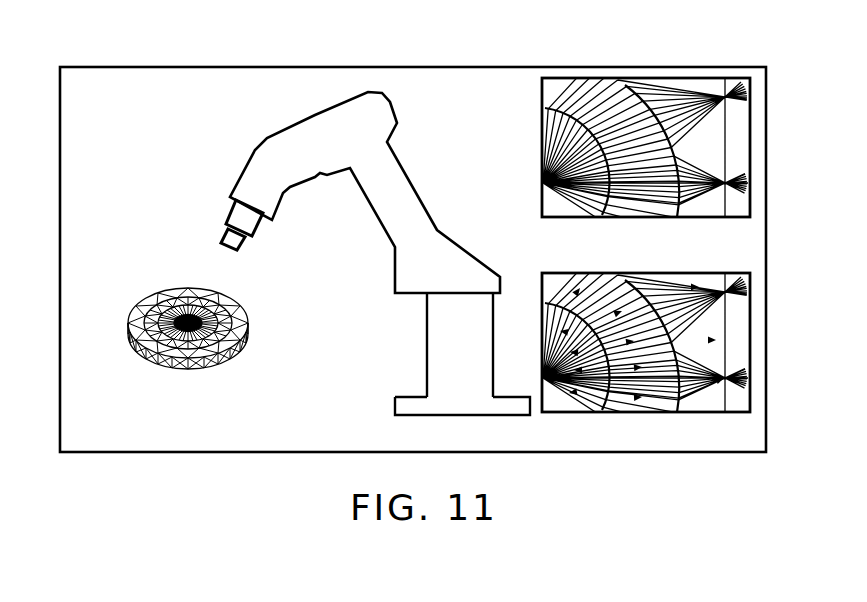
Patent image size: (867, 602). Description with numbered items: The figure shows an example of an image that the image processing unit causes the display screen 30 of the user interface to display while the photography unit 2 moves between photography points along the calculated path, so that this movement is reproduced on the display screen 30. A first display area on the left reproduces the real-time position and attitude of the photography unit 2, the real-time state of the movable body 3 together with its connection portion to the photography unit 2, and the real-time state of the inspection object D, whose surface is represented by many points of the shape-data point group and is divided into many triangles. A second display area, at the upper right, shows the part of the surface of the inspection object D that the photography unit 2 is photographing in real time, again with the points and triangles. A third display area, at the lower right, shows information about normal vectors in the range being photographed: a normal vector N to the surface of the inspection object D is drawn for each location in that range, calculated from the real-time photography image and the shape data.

The display screen 30 is at (600, 51).
The movable body 3 is at (342, 156).
The photography unit 2 is at (250, 222).
The inspection object D is at (243, 332).
The normal vector N is at (575, 395).